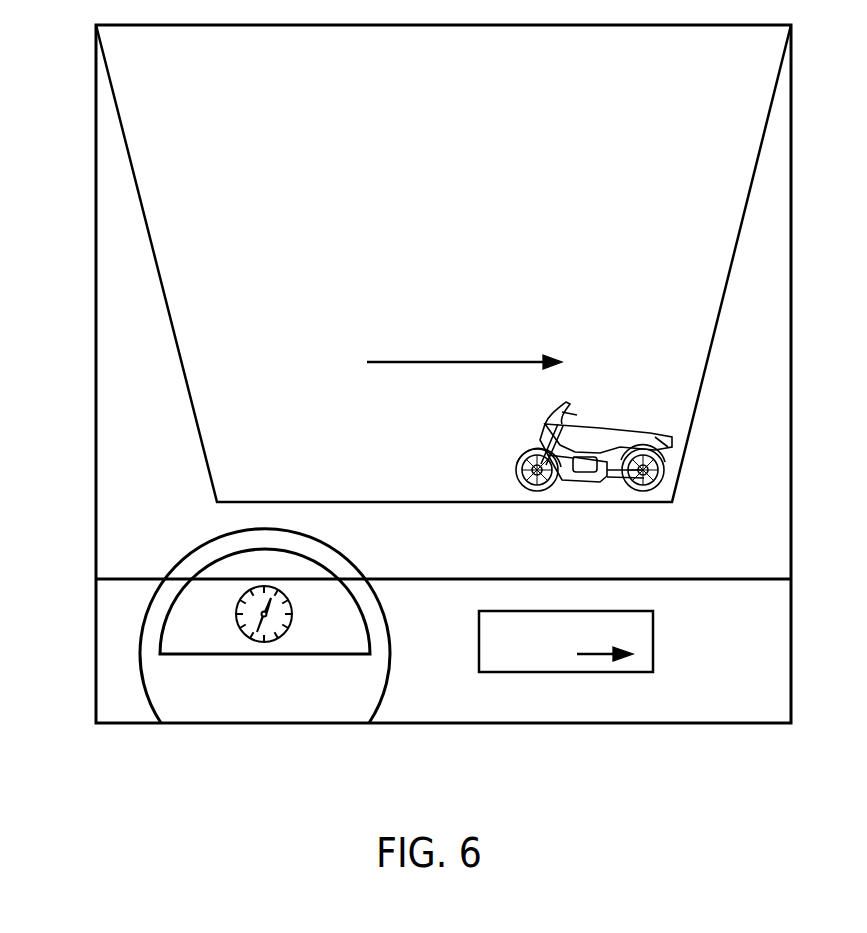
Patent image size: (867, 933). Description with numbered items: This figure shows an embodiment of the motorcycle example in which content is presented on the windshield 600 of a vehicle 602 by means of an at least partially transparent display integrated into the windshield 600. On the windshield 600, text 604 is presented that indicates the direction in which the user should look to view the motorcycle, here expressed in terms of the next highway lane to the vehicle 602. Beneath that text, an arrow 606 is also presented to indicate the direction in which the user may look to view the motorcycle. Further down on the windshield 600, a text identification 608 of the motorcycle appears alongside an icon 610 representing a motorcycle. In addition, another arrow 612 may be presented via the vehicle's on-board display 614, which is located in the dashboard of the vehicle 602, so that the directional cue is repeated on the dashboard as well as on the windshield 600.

The windshield 600 is at (197, 84).
The vehicle 602 is at (96, 375).
The text 604 is at (366, 333).
The arrow 606 is at (423, 363).
The text identification 608 is at (343, 464).
The icon 610 is at (547, 422).
The arrow 612 is at (598, 657).
The on-board display 614 is at (492, 655).